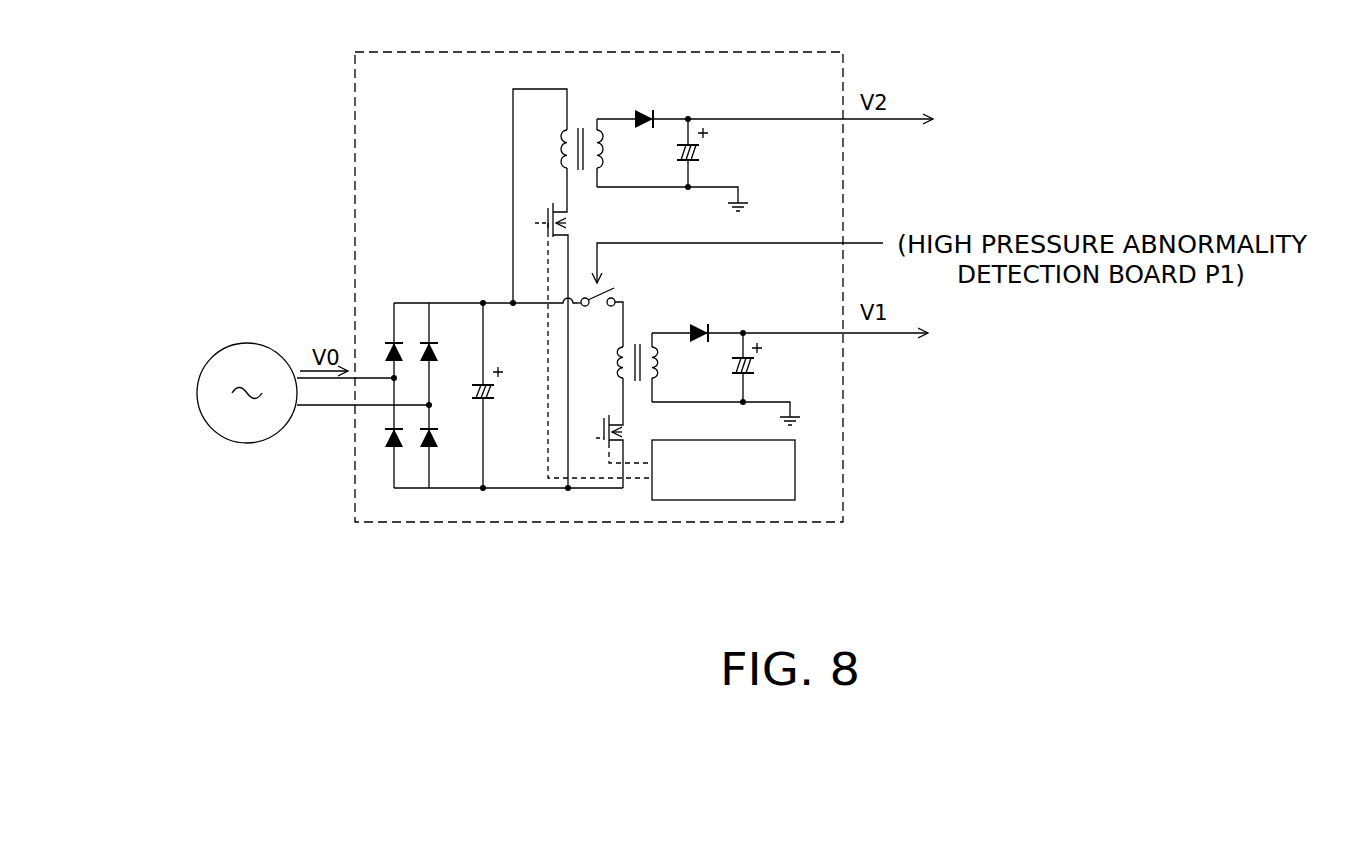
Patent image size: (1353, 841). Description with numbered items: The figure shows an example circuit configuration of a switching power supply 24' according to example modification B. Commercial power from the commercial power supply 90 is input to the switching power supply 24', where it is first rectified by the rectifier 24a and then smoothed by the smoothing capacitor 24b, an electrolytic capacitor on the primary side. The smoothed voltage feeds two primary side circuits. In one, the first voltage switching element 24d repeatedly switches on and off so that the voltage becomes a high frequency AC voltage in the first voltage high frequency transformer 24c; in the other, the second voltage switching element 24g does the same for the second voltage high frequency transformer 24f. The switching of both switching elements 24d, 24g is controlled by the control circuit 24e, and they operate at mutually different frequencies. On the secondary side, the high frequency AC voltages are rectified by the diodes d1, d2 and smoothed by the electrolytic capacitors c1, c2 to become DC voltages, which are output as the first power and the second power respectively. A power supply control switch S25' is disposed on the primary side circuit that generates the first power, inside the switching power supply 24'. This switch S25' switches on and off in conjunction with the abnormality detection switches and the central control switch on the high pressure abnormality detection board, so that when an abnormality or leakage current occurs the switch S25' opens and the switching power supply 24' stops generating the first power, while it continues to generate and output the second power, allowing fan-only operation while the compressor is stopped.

The switching power supply 24' is at (599, 262).
The commercial power supply 90 is at (198, 390).
The rectifier 24a is at (410, 290).
The smoothing capacitor 24b is at (488, 400).
The first voltage high frequency transformer 24c is at (638, 333).
The first voltage switching element 24d is at (614, 433).
The control circuit 24e is at (796, 480).
The second voltage high frequency transformer 24f is at (586, 120).
The second voltage switching element 24g is at (560, 226).
The power supply control switch S25' is at (614, 302).
The diode d1 is at (702, 329).
The diode d2 is at (650, 115).
The electrolytic capacitor c1 is at (757, 368).
The electrolytic capacitor c2 is at (702, 153).